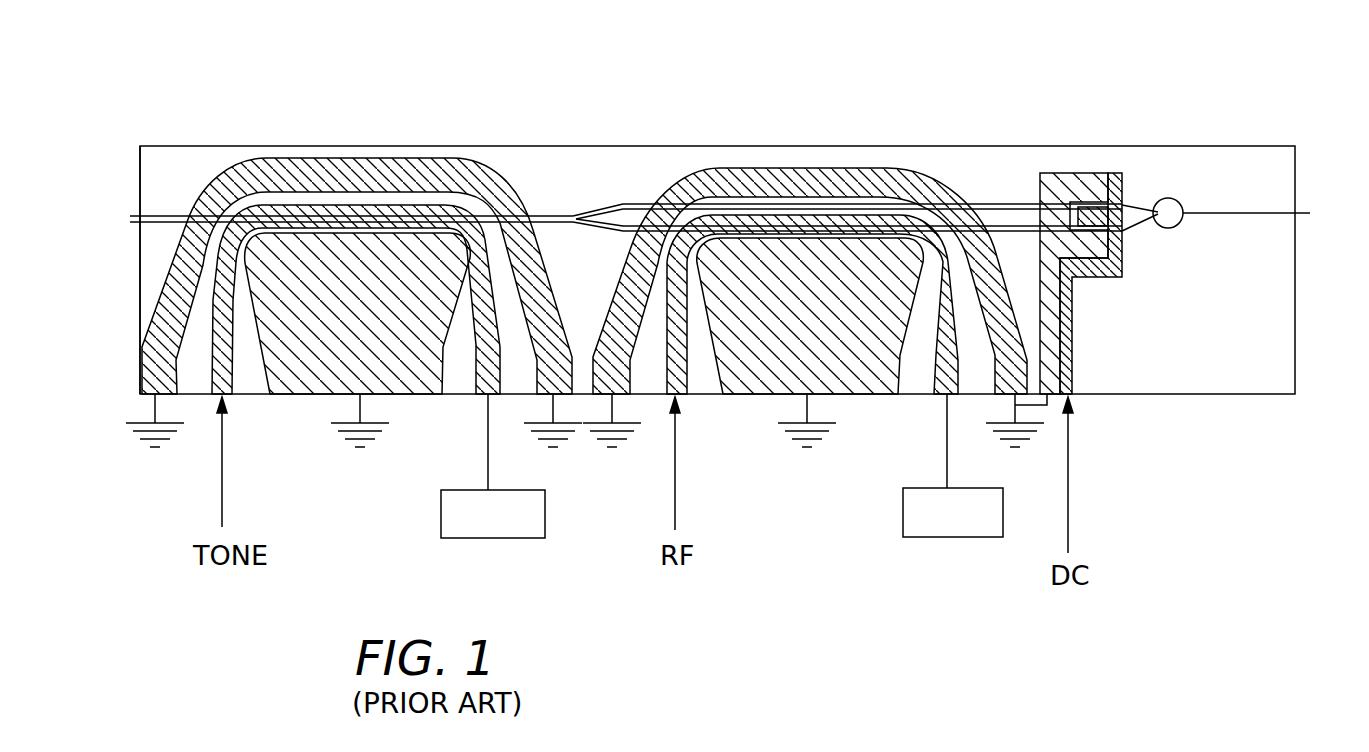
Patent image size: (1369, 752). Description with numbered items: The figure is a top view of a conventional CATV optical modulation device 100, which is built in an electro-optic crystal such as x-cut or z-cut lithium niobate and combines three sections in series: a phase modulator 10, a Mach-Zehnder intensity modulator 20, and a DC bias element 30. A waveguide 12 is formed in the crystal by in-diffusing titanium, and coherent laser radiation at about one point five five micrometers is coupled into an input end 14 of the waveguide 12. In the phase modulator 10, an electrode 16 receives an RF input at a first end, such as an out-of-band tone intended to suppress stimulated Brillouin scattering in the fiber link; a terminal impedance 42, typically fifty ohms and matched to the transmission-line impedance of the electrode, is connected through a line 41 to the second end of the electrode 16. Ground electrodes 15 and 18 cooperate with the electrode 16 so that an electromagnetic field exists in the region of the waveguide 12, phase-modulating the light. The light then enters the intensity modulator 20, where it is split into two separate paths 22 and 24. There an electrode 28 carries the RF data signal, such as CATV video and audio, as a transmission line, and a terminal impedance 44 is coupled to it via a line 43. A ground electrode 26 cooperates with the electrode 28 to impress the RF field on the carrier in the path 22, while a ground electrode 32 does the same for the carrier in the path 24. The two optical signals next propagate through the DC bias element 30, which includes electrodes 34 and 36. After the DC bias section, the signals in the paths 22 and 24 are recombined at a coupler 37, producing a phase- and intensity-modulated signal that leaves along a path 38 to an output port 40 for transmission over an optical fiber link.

The CATV optical modulation device 100 is at (125, 298).
The phase modulator 10 is at (342, 125).
The waveguide 12 is at (168, 216).
The input end 14 is at (130, 218).
The ground electrode 15 is at (440, 160).
The electrode 16 is at (463, 196).
The ground electrode 18 is at (297, 396).
The Mach-Zehnder intensity modulator 20 is at (802, 135).
The path 22 is at (617, 203).
The path 24 is at (608, 232).
The ground electrode 26 is at (897, 166).
The electrode 28 is at (935, 212).
The DC bias element 30 is at (1088, 122).
The ground electrode 32 is at (760, 396).
The electrode 34 is at (1083, 172).
The electrode 36 is at (1107, 277).
The coupler 37 is at (1168, 229).
The path 38 is at (1207, 210).
The output port 40 is at (1310, 213).
The line 41 is at (488, 445).
The terminal impedance 42 is at (441, 518).
The line 43 is at (947, 442).
The terminal impedance 44 is at (905, 537).